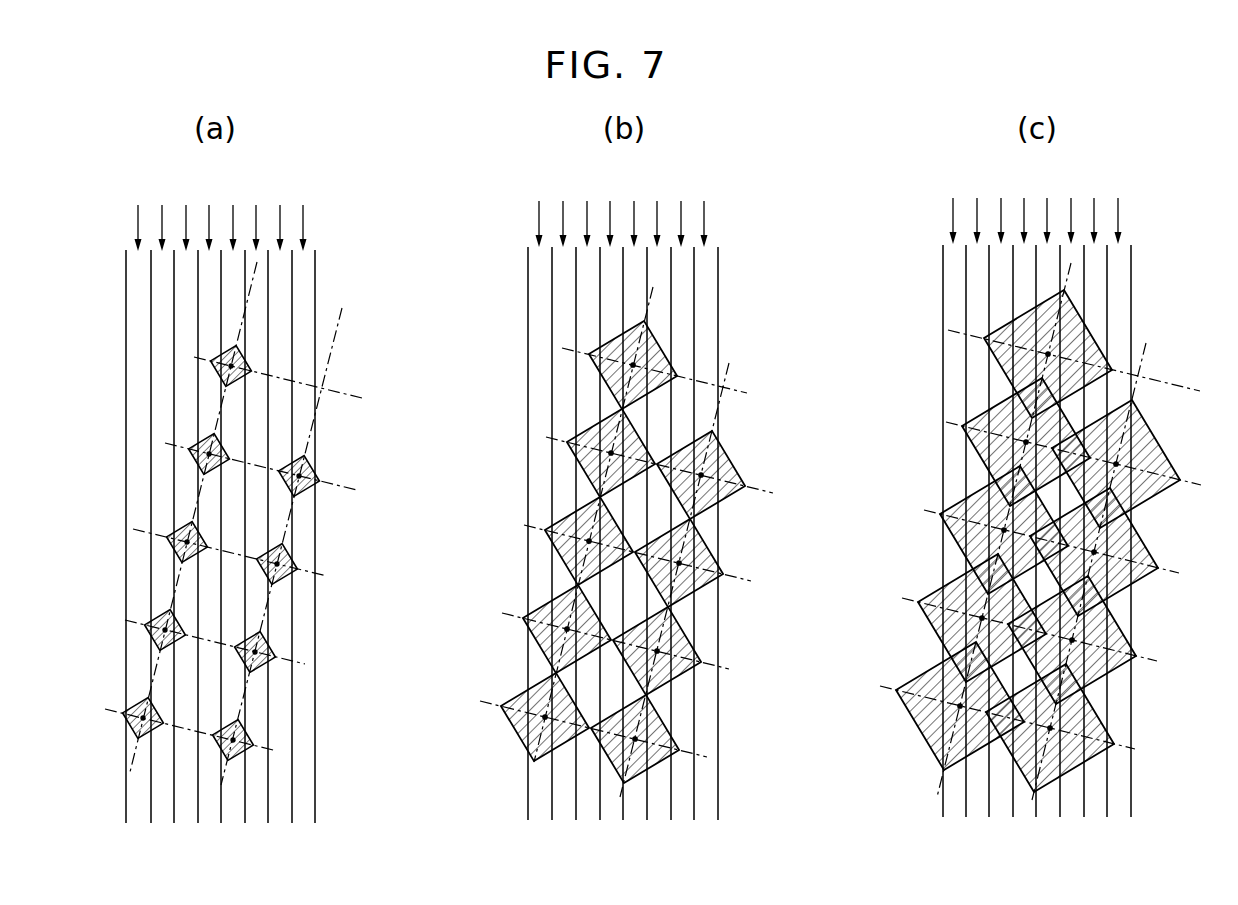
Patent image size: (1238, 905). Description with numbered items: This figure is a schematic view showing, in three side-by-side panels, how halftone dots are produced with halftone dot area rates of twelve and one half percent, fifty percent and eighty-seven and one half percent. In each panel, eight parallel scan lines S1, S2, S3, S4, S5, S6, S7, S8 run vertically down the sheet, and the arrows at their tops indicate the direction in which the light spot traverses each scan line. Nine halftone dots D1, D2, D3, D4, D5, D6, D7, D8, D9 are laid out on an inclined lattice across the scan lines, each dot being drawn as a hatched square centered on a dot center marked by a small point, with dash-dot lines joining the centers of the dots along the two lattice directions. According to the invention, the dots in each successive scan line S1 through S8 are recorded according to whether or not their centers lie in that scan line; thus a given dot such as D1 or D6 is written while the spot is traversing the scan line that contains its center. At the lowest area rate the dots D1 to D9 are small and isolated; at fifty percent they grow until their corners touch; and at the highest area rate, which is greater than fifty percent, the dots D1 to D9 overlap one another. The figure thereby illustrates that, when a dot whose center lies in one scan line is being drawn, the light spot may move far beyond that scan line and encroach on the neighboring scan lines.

The light beam / slit 1 S1 is at (546, 497).
The light beam / slit 2 S2 is at (571, 485).
The light beam / slit 3 S3 is at (594, 497).
The light beam / slit 4 S4 is at (618, 485).
The light beam / slit 5 S5 is at (641, 497).
The light beam / slit 6 S6 is at (665, 485).
The light beam / slit 7 S7 is at (688, 497).
The light beam / slit 8 S8 is at (712, 485).
The detector element 1 D1 is at (141, 706).
The detector element 2 D2 is at (152, 618).
The detector element 3 D3 is at (181, 531).
The detector element 4 D4 is at (202, 443).
The detector element 5 D5 is at (226, 355).
The detector element 6 D6 is at (247, 730).
The detector element 7 D7 is at (270, 643).
The detector element 8 D8 is at (288, 555).
The detector element 9 D9 is at (313, 468).